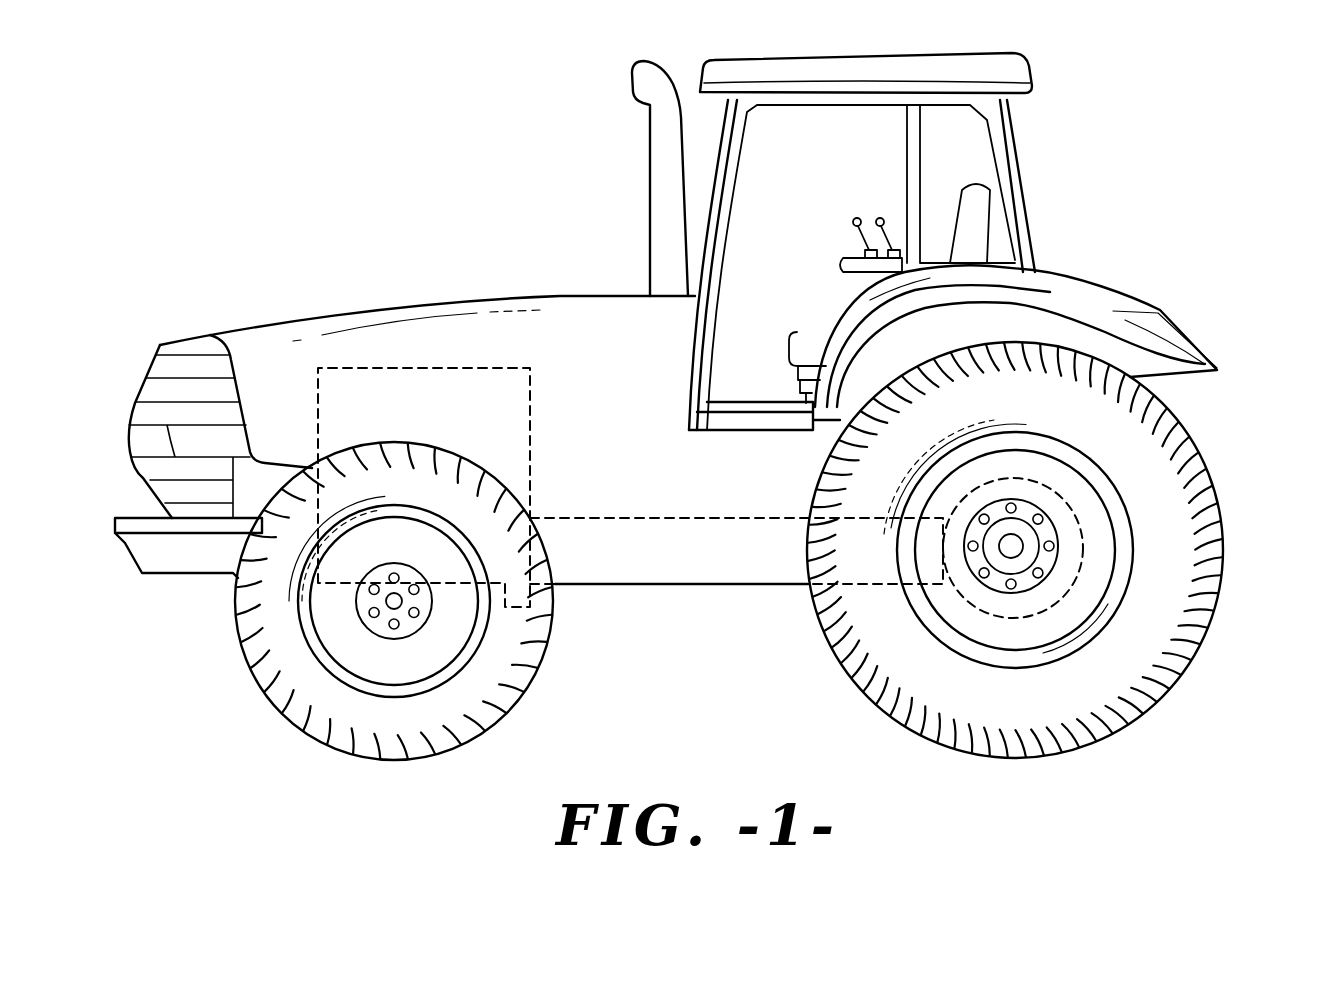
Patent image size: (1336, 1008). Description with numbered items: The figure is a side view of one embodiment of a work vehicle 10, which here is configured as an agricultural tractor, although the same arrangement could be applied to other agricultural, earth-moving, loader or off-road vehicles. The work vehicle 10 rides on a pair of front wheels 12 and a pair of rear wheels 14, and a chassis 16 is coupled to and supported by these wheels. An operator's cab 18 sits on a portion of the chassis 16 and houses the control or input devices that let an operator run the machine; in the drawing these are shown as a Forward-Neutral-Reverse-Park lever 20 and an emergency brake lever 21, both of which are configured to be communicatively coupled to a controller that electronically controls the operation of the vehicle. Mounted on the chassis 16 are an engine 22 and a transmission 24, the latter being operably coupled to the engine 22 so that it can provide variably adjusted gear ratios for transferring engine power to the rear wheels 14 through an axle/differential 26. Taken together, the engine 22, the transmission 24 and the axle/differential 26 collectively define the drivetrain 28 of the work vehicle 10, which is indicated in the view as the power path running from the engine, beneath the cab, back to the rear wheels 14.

The work vehicle 10 is at (320, 197).
The front wheels 12 is at (237, 620).
The rear wheels 14 is at (1222, 583).
The chassis 16 is at (623, 587).
The operator's cab 18 is at (1023, 190).
The Forward-Neutral-Reverse-Park (FNRP) lever 20 is at (855, 219).
The emergency brake lever 21 is at (880, 218).
The engine 22 is at (393, 367).
The transmission 24 is at (690, 517).
The axle/differential 26 is at (1093, 552).
The drivetrain 28 is at (587, 318).